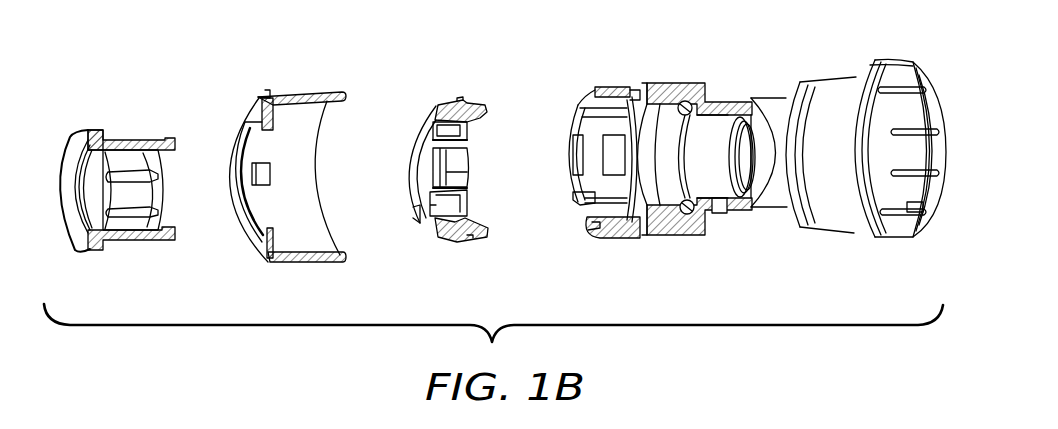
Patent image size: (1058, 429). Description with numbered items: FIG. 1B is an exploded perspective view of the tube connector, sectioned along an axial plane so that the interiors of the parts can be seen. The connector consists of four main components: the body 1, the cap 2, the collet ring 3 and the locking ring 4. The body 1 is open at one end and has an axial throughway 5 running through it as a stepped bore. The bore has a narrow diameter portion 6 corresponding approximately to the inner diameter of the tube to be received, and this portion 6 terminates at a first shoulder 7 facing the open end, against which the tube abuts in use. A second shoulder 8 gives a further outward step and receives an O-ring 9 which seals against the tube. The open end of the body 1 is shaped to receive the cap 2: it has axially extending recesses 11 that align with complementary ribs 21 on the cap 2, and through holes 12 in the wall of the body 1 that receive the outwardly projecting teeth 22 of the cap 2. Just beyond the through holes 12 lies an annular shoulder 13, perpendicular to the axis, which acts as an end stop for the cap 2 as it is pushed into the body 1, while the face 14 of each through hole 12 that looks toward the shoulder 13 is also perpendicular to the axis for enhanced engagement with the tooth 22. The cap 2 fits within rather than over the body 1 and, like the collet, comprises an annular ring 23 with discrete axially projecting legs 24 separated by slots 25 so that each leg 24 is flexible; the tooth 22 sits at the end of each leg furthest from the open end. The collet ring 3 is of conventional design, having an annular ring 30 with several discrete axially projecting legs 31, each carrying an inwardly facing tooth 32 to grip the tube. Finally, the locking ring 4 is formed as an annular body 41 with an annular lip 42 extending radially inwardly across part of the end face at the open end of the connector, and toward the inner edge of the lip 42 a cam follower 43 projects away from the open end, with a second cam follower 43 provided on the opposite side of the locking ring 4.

The body 1 is at (695, 54).
The cap 2 is at (450, 82).
The collet ring 3 is at (146, 122).
The locking ring 4 is at (310, 82).
The axial throughway 5 is at (713, 138).
The narrow diameter portion 6 is at (755, 147).
The first shoulder 7 is at (750, 203).
The second shoulder 8 is at (705, 205).
The O-ring 9 is at (683, 216).
The axially extending recesses 11 is at (595, 107).
The through holes 12 is at (636, 82).
The annular shoulder 13 is at (648, 84).
The face of the recess 14 is at (637, 238).
The ribs 21 is at (415, 120).
The teeth 22 is at (478, 100).
The annular ring 23 is at (445, 242).
The legs 24 is at (460, 203).
The slots 25 is at (467, 142).
The annular ring 30 is at (98, 252).
The legs 31 is at (130, 226).
The tooth 32 is at (152, 190).
The annular body 41 is at (307, 263).
The annular lip 42 is at (255, 240).
The cam follower 43 is at (264, 172).